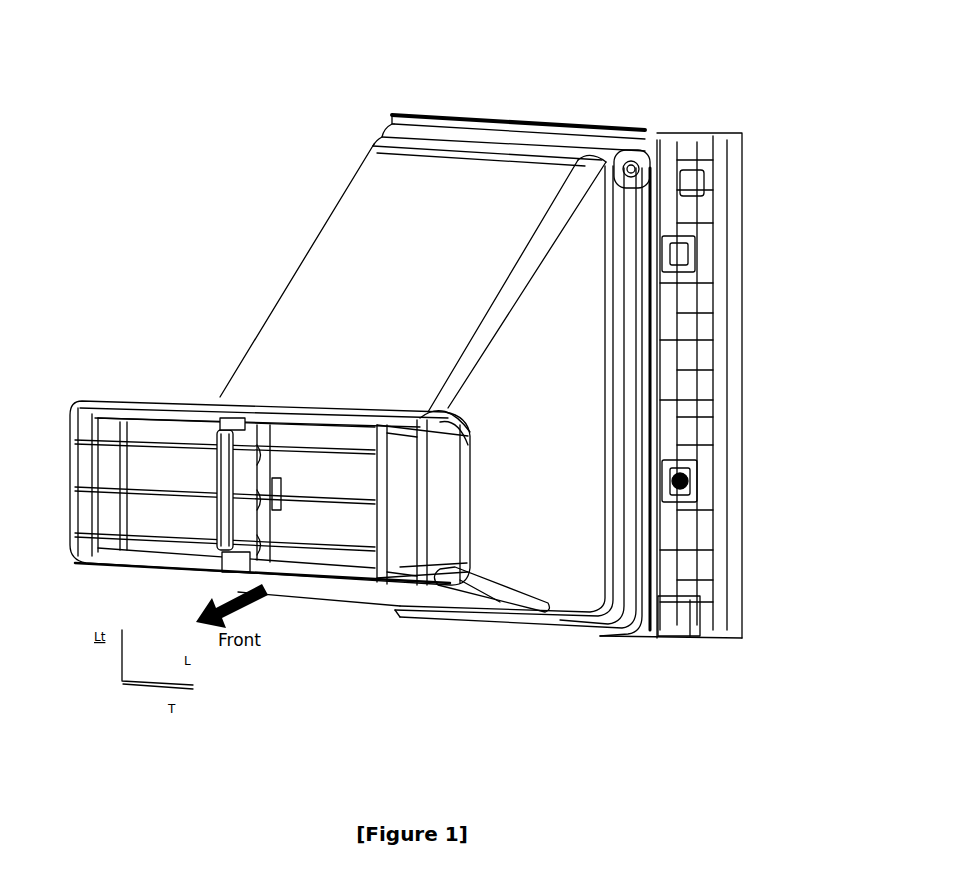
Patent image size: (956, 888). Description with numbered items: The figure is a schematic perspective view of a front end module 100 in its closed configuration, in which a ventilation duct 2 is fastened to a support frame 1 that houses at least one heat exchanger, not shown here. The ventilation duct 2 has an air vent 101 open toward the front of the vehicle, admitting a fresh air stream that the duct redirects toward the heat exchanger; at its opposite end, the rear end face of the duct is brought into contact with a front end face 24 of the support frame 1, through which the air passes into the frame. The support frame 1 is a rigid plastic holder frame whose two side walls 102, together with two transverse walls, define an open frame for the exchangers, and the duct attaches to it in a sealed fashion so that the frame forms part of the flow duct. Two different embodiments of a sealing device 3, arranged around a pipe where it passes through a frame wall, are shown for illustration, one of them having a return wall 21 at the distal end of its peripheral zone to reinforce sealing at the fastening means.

The front end module 100 is at (200, 254).
The ventilation duct 2 is at (360, 208).
The air vent 101 is at (166, 460).
The support frame 1 is at (668, 150).
The front end face 24 is at (642, 148).
The side walls 102 is at (704, 193).
The sealing device 3 is at (688, 228).
The return wall 21 is at (660, 608).